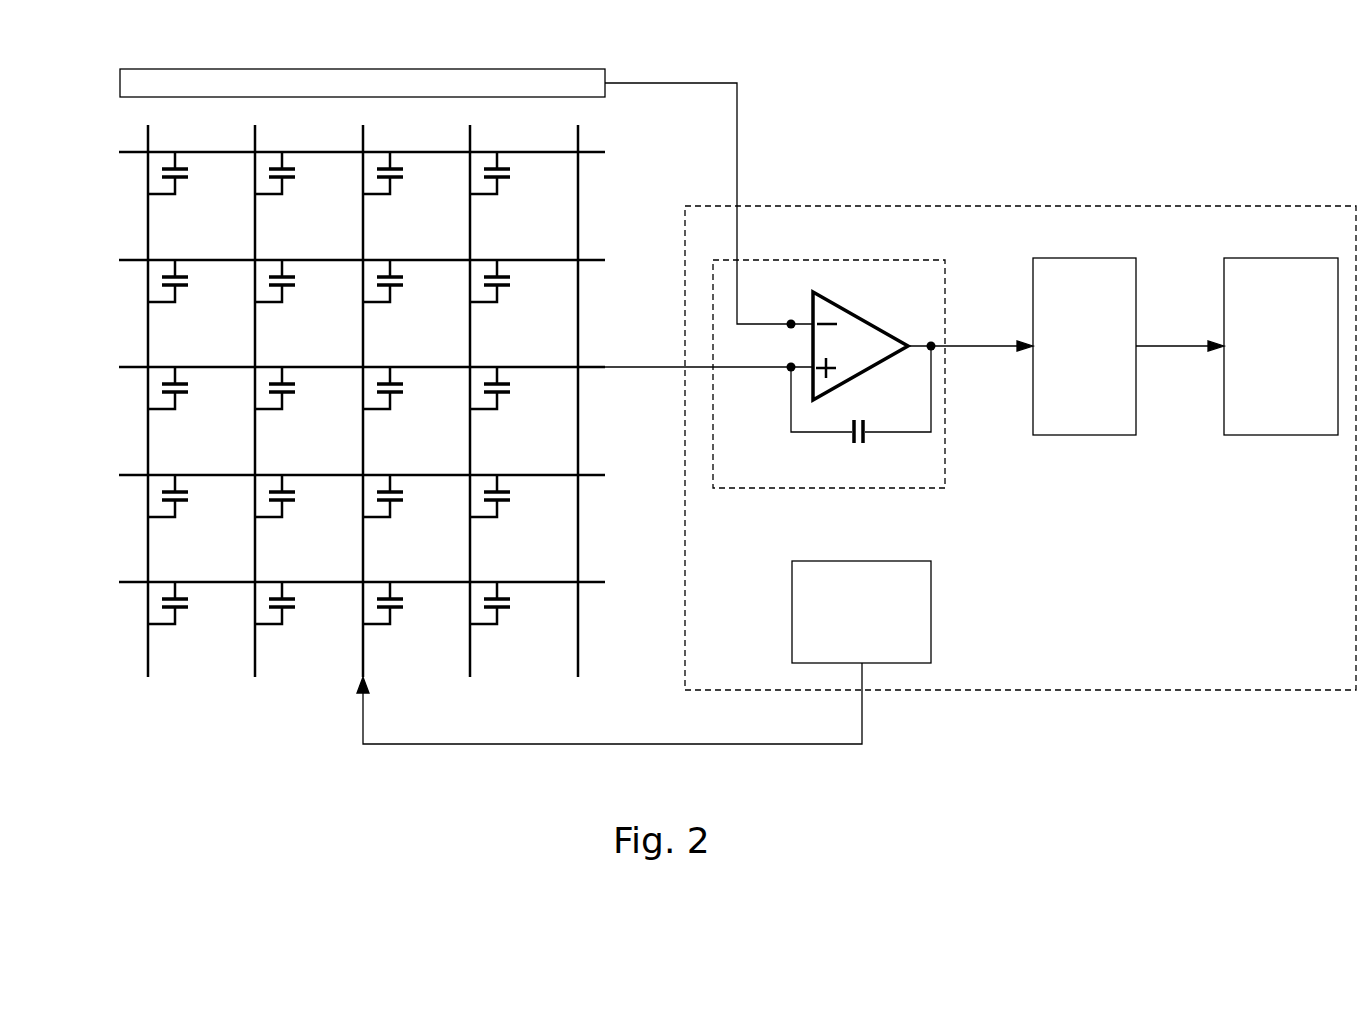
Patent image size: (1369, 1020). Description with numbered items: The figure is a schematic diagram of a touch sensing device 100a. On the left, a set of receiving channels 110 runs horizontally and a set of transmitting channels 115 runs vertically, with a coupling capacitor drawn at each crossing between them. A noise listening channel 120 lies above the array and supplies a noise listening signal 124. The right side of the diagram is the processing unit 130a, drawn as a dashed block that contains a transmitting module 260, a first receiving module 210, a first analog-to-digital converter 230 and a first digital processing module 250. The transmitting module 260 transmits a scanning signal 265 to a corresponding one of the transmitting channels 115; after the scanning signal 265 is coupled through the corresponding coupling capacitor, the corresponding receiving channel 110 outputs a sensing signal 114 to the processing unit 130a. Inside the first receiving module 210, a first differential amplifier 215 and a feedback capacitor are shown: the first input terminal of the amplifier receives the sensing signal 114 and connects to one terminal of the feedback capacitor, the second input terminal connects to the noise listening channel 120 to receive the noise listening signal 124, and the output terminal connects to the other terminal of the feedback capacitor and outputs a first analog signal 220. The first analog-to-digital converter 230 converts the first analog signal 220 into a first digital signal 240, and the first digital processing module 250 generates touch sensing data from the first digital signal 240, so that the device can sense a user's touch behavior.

The touch sensing device 100a is at (1023, 37).
The receiving channels 110 is at (132, 152).
The transmitting channels 115 is at (148, 657).
The noise listening channel 120 is at (507, 69).
The noise listening signal 124 is at (623, 83).
The sensing signal 114 is at (657, 367).
The processing unit 130a is at (1130, 206).
The first receiving module 210 is at (885, 260).
The first differential amplifier 215 is at (845, 305).
The first analog signal 220 is at (955, 346).
The first analog-to-digital converter 230 is at (1066, 410).
The first digital signal 240 is at (1150, 346).
The first digital processing module 250 is at (1263, 410).
The transmitting module 260 is at (844, 652).
The scanning signal 265 is at (695, 744).